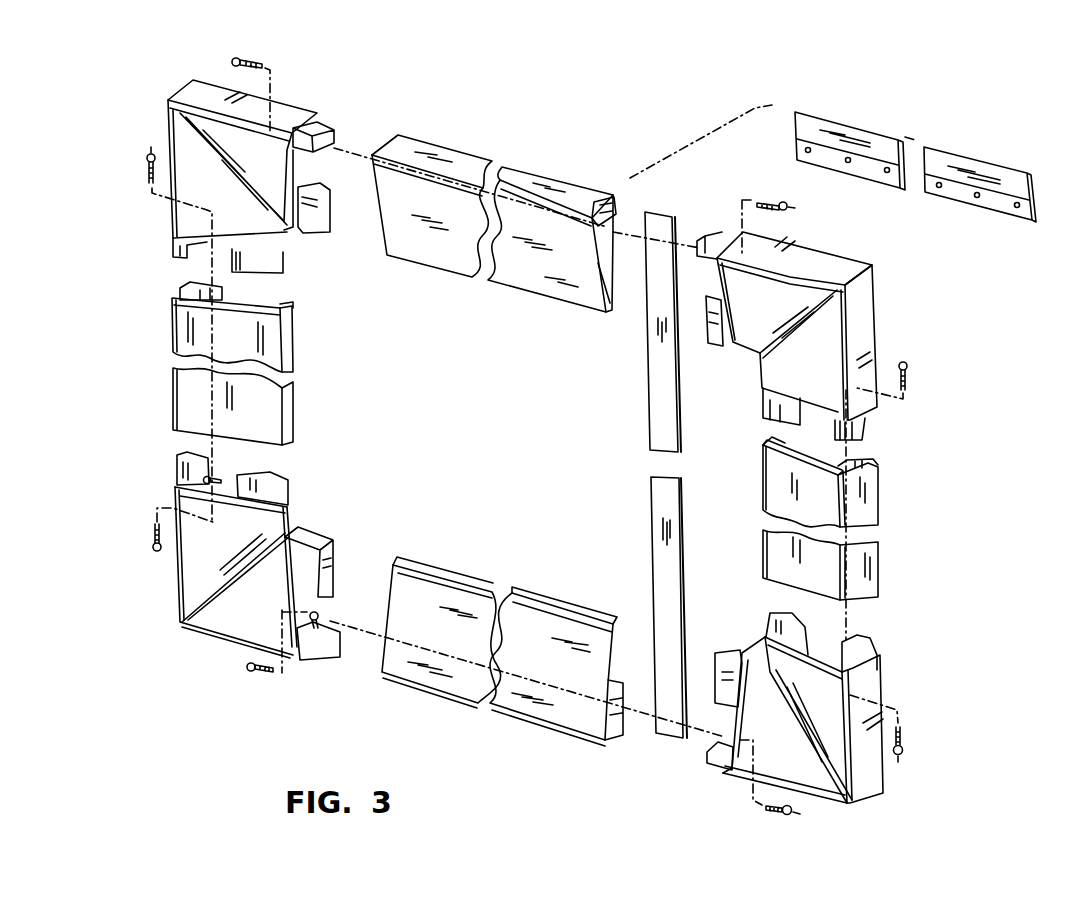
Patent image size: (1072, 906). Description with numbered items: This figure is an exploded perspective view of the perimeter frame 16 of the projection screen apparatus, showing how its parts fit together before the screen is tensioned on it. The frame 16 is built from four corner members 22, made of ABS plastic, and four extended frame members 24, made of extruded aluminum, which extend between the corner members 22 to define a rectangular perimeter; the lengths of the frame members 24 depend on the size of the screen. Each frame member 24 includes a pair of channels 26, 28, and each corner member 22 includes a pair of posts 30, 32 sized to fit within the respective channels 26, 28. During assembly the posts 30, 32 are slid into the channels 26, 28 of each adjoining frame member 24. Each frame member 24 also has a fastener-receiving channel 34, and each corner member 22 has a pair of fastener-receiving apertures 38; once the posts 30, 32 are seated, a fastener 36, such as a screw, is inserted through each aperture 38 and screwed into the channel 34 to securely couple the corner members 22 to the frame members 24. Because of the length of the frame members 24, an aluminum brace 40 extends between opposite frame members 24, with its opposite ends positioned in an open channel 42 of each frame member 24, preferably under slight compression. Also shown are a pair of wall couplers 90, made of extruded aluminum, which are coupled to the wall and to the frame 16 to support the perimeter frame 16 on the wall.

The perimeter frame 16 is at (602, 107).
The corner member 22 is at (157, 93).
The extended frame member 24 is at (465, 128).
The channel 26 is at (173, 285).
The channel 28 is at (290, 304).
The post 30 is at (273, 263).
The post 32 is at (182, 250).
The fastener-receiving channel 34 is at (617, 232).
The fastener 36 is at (793, 204).
The fastener-receiving aperture 38 is at (220, 467).
The brace 40 is at (630, 407).
The open channel 42 is at (620, 215).
The wall coupler 90 is at (882, 115).